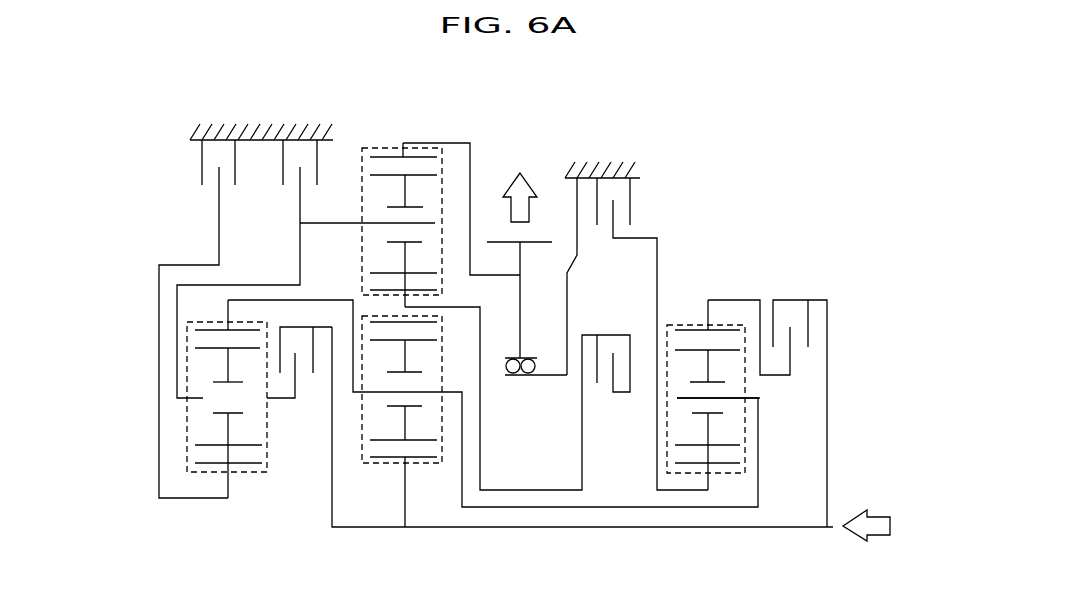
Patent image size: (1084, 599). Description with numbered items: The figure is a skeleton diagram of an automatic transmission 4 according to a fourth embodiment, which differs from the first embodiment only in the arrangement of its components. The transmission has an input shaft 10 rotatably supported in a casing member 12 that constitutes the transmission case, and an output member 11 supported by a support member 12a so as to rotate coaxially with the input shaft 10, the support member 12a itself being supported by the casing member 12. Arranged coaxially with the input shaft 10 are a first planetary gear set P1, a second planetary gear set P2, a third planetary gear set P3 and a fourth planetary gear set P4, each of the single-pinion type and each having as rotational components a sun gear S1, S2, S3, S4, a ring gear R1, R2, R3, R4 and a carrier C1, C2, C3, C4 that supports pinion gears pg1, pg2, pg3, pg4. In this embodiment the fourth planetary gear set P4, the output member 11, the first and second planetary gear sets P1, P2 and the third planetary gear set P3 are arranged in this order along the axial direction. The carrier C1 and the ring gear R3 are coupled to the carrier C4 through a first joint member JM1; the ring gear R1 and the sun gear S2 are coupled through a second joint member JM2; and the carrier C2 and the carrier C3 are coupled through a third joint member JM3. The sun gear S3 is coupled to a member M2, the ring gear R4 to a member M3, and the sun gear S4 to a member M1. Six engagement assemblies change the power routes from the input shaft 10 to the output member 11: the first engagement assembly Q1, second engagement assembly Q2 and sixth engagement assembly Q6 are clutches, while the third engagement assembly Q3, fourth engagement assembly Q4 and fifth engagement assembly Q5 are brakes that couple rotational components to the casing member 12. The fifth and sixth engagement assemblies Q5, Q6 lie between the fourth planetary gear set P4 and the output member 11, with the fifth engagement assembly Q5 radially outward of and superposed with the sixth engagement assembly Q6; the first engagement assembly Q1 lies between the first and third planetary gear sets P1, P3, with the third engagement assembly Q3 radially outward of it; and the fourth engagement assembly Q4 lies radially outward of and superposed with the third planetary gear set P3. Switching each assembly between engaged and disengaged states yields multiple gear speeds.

The automatic transmission 4 is at (778, 172).
The input shaft 10 is at (612, 527).
The output member 11 is at (522, 292).
The casing member 12 is at (268, 132).
The support member 12a is at (567, 290).
The first planetary gear set P1 is at (430, 463).
The second planetary gear set P2 is at (362, 167).
The third planetary gear set P3 is at (263, 472).
The fourth planetary gear set P4 is at (745, 362).
The sun gear S1 is at (378, 457).
The sun gear S2 is at (378, 273).
The sun gear S3 is at (248, 463).
The sun gear S4 is at (735, 463).
The ring gear R1 is at (425, 322).
The ring gear R2 is at (378, 157).
The ring gear R3 is at (210, 330).
The ring gear R4 is at (687, 330).
The carrier C1 is at (425, 387).
The carrier C2 is at (425, 222).
The carrier C3 is at (203, 398).
The carrier C4 is at (678, 400).
The pinion gear pg1 is at (405, 412).
The pinion gear pg2 is at (403, 202).
The pinion gear pg3 is at (240, 445).
The pinion gear pg4 is at (708, 432).
The first engagement assembly Q1 is at (303, 343).
The second engagement assembly Q2 is at (800, 315).
The third engagement assembly Q3 is at (290, 163).
The fourth engagement assembly Q4 is at (212, 158).
The fifth engagement assembly Q5 is at (618, 198).
The sixth engagement assembly Q6 is at (622, 358).
The member M1 is at (668, 490).
The member M2 is at (188, 498).
The member M3 is at (737, 300).
The first joint member JM1 is at (533, 507).
The second joint member JM2 is at (545, 490).
The third joint member JM3 is at (300, 258).